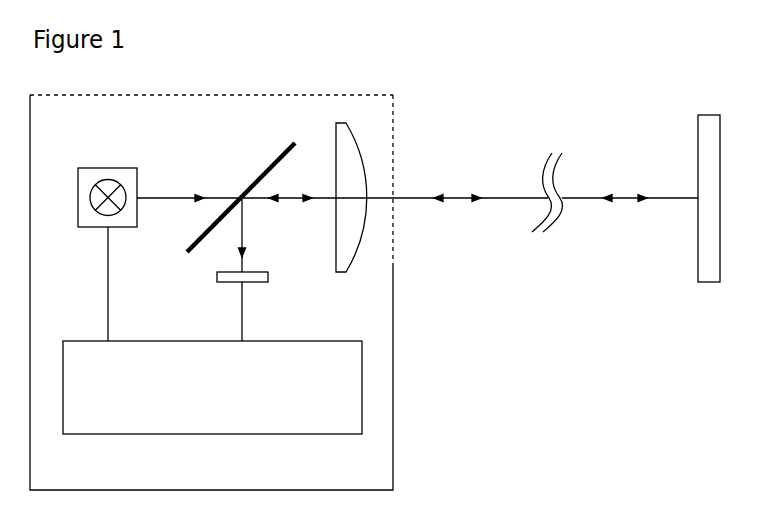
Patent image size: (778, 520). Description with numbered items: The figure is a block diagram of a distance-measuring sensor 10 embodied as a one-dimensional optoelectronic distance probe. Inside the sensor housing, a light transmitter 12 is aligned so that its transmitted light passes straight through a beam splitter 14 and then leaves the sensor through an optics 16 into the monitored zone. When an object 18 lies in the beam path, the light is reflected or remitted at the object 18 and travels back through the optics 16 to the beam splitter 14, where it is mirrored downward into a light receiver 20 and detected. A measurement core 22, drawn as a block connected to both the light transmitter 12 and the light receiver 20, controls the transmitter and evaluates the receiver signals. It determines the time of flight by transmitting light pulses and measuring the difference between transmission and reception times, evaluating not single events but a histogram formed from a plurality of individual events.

The distance-measuring sensor 10 is at (510, 83).
The light transmitter 12 is at (107, 175).
The beam splitter 14 is at (263, 173).
The optics 16 is at (342, 124).
The object 18 is at (698, 115).
The light receiver 20 is at (257, 273).
The measurement core 22 is at (103, 435).